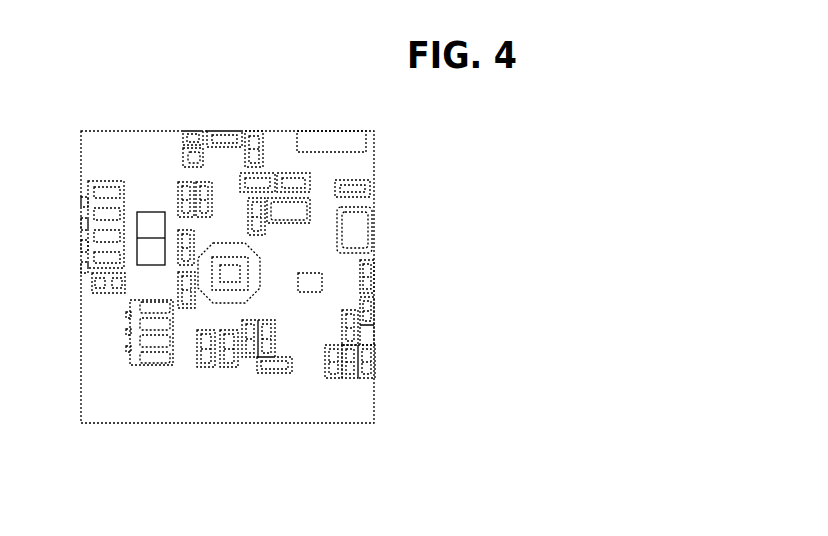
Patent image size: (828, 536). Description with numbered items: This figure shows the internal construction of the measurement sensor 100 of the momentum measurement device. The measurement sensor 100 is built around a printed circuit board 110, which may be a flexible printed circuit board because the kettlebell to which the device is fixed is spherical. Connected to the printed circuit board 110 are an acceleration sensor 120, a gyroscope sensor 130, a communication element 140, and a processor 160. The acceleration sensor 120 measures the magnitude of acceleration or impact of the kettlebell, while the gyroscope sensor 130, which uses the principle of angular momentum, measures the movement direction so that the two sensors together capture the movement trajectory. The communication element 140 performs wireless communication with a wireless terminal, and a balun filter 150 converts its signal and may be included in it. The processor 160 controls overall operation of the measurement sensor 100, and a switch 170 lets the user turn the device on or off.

The measurement sensor 100 is at (403, 313).
The printed circuit board 110 is at (348, 372).
The acceleration sensor 120 is at (132, 227).
The gyroscope sensor 130 is at (148, 252).
The communication element 140 is at (358, 143).
The balun filter 150 is at (358, 228).
The processor 160 is at (322, 277).
The switch 170 is at (230, 296).